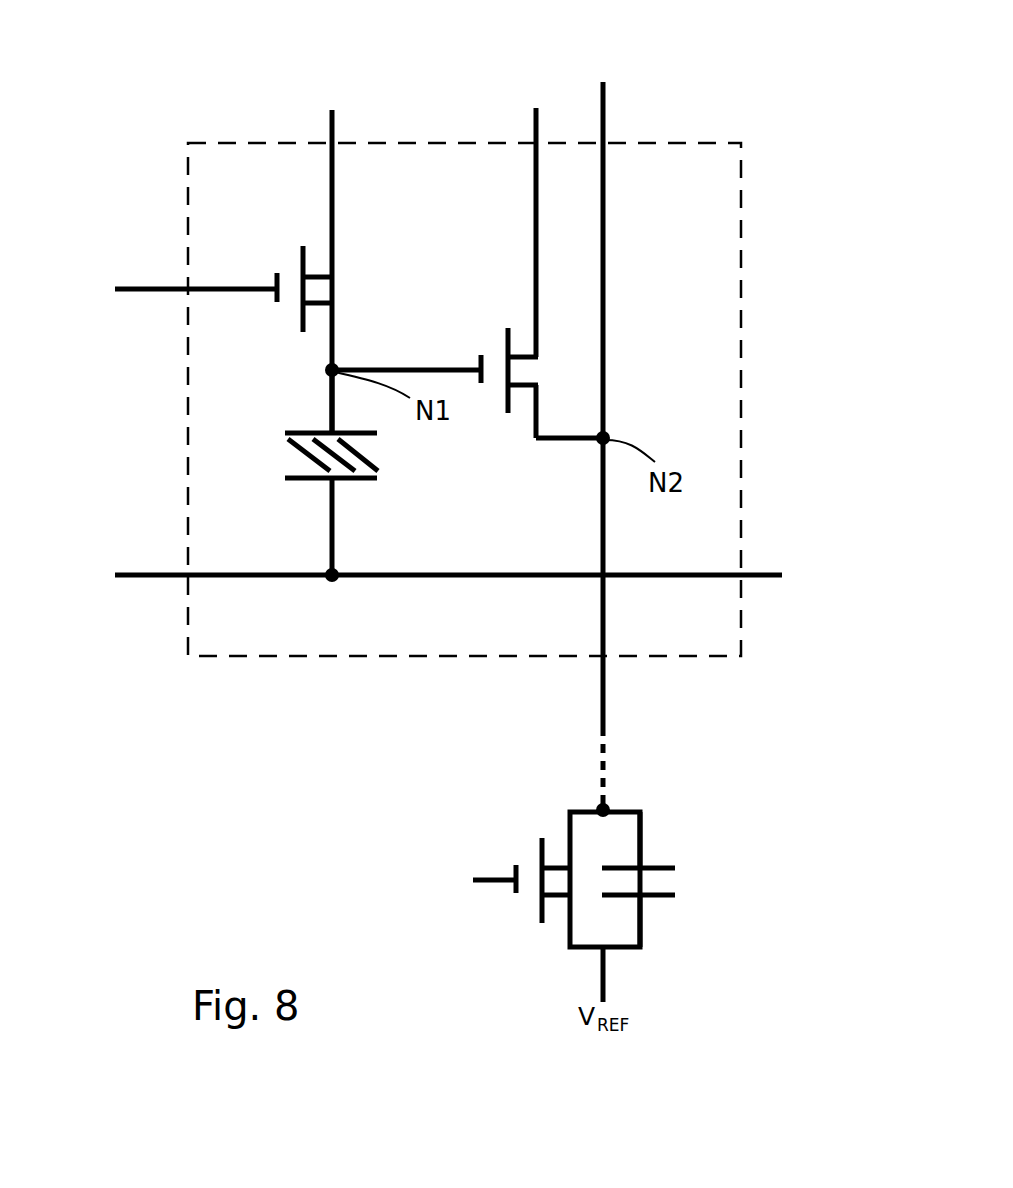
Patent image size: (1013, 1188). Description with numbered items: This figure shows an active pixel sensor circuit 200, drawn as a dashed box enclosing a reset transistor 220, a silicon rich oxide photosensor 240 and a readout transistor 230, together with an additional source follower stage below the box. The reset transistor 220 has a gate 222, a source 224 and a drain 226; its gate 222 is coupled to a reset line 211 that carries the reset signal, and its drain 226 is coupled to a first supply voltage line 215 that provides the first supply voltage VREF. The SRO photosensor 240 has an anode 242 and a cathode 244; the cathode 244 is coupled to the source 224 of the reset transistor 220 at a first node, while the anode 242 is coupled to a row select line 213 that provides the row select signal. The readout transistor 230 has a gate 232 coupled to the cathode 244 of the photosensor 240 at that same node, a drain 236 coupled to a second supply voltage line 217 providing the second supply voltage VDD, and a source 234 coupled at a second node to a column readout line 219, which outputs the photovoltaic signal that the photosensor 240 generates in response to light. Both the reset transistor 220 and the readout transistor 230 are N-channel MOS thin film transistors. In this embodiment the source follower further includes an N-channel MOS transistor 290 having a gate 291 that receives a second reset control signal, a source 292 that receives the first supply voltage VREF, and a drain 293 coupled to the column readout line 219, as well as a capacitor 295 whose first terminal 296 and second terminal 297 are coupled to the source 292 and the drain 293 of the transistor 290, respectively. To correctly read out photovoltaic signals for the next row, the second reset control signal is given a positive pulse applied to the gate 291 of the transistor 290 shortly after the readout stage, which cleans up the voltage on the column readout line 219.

The active pixel sensor circuit 200 is at (146, 216).
The reset line 211 is at (143, 292).
The row select line 213 is at (152, 572).
The first supply voltage line 215 is at (330, 125).
The second supply voltage line 217 is at (534, 125).
The column readout line 219 is at (601, 670).
The reset transistor 220 is at (312, 269).
The gate of reset transistor 222 is at (253, 292).
The source of reset transistor 224 is at (335, 330).
The drain of reset transistor 226 is at (335, 248).
The readout transistor 230 is at (571, 349).
The gate of readout transistor 232 is at (470, 355).
The source of readout transistor 234 is at (540, 412).
The drain of readout transistor 236 is at (540, 328).
The silicon rich oxide photosensor 240 is at (332, 472).
The anode of SRO photosensor 242 is at (330, 515).
The cathode of SRO photosensor 244 is at (330, 413).
The N-channel MOS transistor 290 is at (494, 881).
The gate of N-channel MOS transistor 291 is at (478, 885).
The source of N-channel MOS transistor 292 is at (568, 925).
The drain of N-channel MOS transistor 293 is at (568, 825).
The capacitor 295 is at (668, 866).
The first terminal of capacitor 296 is at (642, 918).
The second terminal of capacitor 297 is at (645, 832).